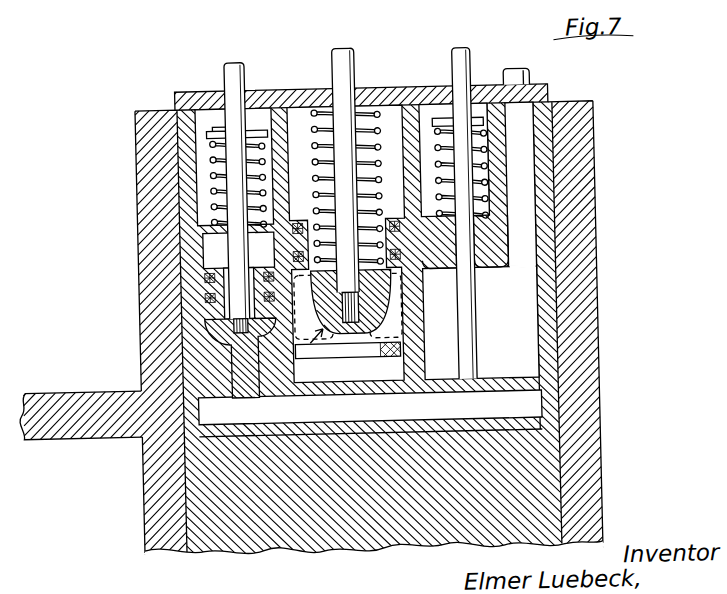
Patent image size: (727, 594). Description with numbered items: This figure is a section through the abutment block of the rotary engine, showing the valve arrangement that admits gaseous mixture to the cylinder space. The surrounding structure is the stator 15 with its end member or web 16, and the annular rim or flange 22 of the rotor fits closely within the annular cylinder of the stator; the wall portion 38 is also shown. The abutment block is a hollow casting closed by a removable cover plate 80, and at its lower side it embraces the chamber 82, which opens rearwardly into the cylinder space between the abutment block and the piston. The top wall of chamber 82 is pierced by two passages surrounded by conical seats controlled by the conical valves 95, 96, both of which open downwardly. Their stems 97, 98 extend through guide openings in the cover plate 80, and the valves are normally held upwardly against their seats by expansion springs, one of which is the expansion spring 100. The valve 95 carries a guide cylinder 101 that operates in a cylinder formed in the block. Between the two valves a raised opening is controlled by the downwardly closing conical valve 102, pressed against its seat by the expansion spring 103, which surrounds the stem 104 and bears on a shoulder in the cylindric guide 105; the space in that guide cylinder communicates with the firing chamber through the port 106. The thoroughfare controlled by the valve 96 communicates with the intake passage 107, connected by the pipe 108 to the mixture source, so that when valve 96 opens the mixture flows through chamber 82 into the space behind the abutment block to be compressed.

The stator 15 is at (667, 112).
The end member or web 16 is at (77, 426).
The annular rim or flange 22 is at (532, 455).
The side wall 38 is at (537, 262).
The cover plate 80 is at (397, 88).
The chamber 82 is at (318, 412).
The conical valve 95 is at (225, 380).
The conical valve 96 is at (209, 168).
The valve stem 97 is at (248, 73).
The valve stem 98 is at (473, 66).
The expansion spring 100 is at (507, 169).
The guide cylinder 101 is at (205, 255).
The conical valve 102 is at (300, 378).
The expansion spring 103 is at (319, 141).
The valve stem 104 is at (361, 53).
The cylindric guide 105 is at (396, 217).
The port 106 is at (397, 309).
The intake passage 107 is at (523, 234).
The pipe 108 is at (533, 72).